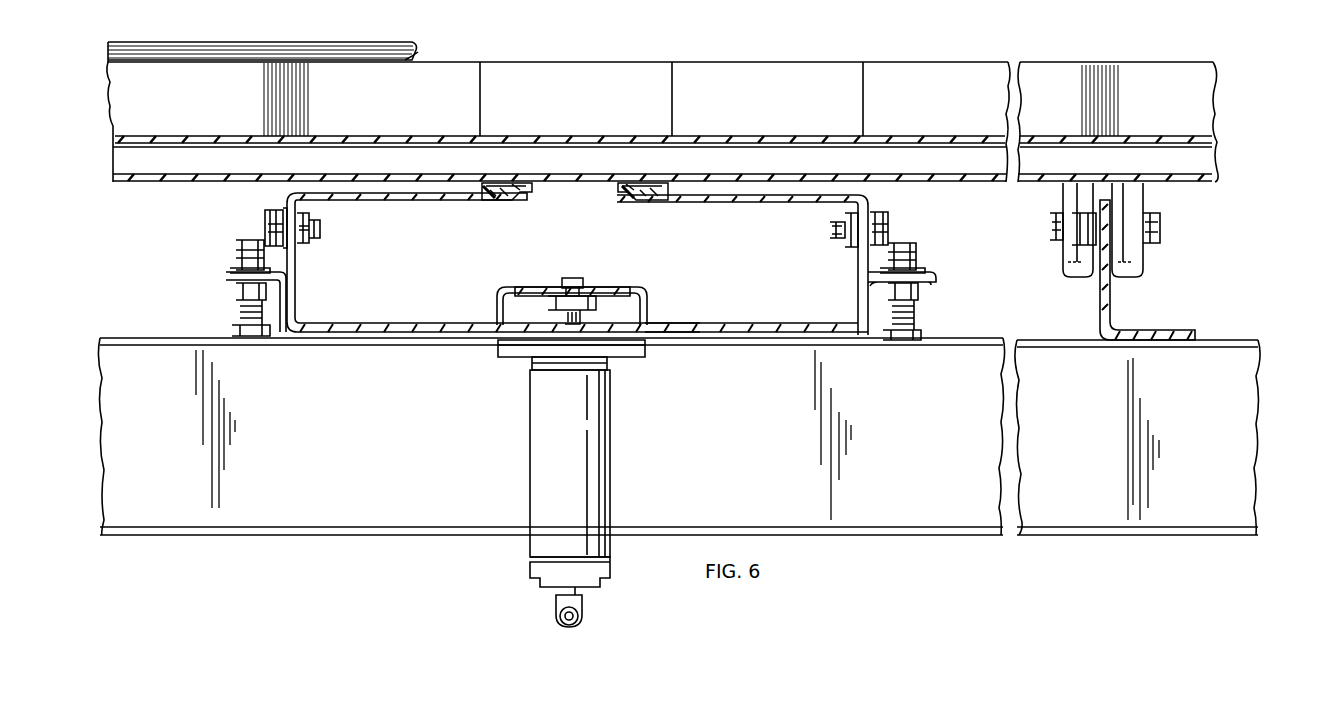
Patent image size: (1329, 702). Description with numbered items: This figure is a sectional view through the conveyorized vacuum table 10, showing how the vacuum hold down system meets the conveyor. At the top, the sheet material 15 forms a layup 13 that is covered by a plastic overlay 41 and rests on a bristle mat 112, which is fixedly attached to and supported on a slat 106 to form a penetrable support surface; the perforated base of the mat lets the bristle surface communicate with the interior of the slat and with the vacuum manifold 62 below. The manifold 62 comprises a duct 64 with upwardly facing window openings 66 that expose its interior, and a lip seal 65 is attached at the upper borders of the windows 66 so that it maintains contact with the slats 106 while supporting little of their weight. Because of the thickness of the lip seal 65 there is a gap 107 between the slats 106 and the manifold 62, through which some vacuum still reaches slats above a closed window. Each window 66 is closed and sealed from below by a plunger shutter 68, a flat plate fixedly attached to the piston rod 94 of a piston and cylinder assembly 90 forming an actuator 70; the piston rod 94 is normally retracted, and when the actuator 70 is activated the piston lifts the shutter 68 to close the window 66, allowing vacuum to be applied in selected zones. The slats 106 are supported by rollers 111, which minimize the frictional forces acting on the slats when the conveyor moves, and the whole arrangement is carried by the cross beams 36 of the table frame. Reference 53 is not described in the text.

The vacuum table 10 is at (861, 57).
The layup 13 is at (100, 44).
The sheet material 15 is at (418, 54).
The plastic overlay 41 is at (210, 42).
The bristle mat 112 is at (716, 71).
The slat 106 is at (945, 163).
The clamp bracket 53 is at (534, 180).
The lip seal 65 is at (632, 183).
The gap 107 is at (463, 196).
The duct 64 is at (288, 200).
The window opening 66 is at (612, 198).
The vacuum manifold 62 is at (899, 235).
The plunger shutter 68 is at (636, 302).
The piston rod 94 is at (582, 312).
The cross beam 36 is at (143, 338).
The actuator 70 is at (620, 450).
The piston and cylinder assembly 90 is at (610, 397).
The roller 111 is at (1062, 271).